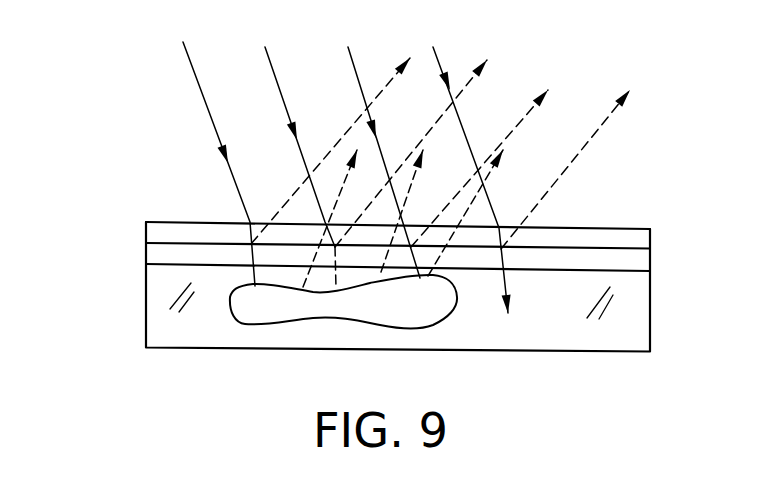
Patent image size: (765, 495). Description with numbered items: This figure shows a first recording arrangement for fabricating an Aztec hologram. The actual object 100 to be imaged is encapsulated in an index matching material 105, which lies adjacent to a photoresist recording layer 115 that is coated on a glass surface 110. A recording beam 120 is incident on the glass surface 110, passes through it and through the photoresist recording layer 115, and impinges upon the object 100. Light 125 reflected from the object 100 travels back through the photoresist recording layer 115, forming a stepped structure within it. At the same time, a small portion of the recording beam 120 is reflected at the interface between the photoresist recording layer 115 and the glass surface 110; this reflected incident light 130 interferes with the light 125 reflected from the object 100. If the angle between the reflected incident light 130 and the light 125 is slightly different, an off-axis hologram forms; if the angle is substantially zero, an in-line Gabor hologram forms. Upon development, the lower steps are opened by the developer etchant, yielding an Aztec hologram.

The object 100 is at (412, 322).
The index matching material 105 is at (153, 318).
The glass surface 110 is at (146, 255).
The photoresist recording layer 115 is at (146, 232).
The recording beam 120 is at (433, 55).
The light reflected from object 125 is at (403, 196).
The reflected incident light 130 is at (408, 68).